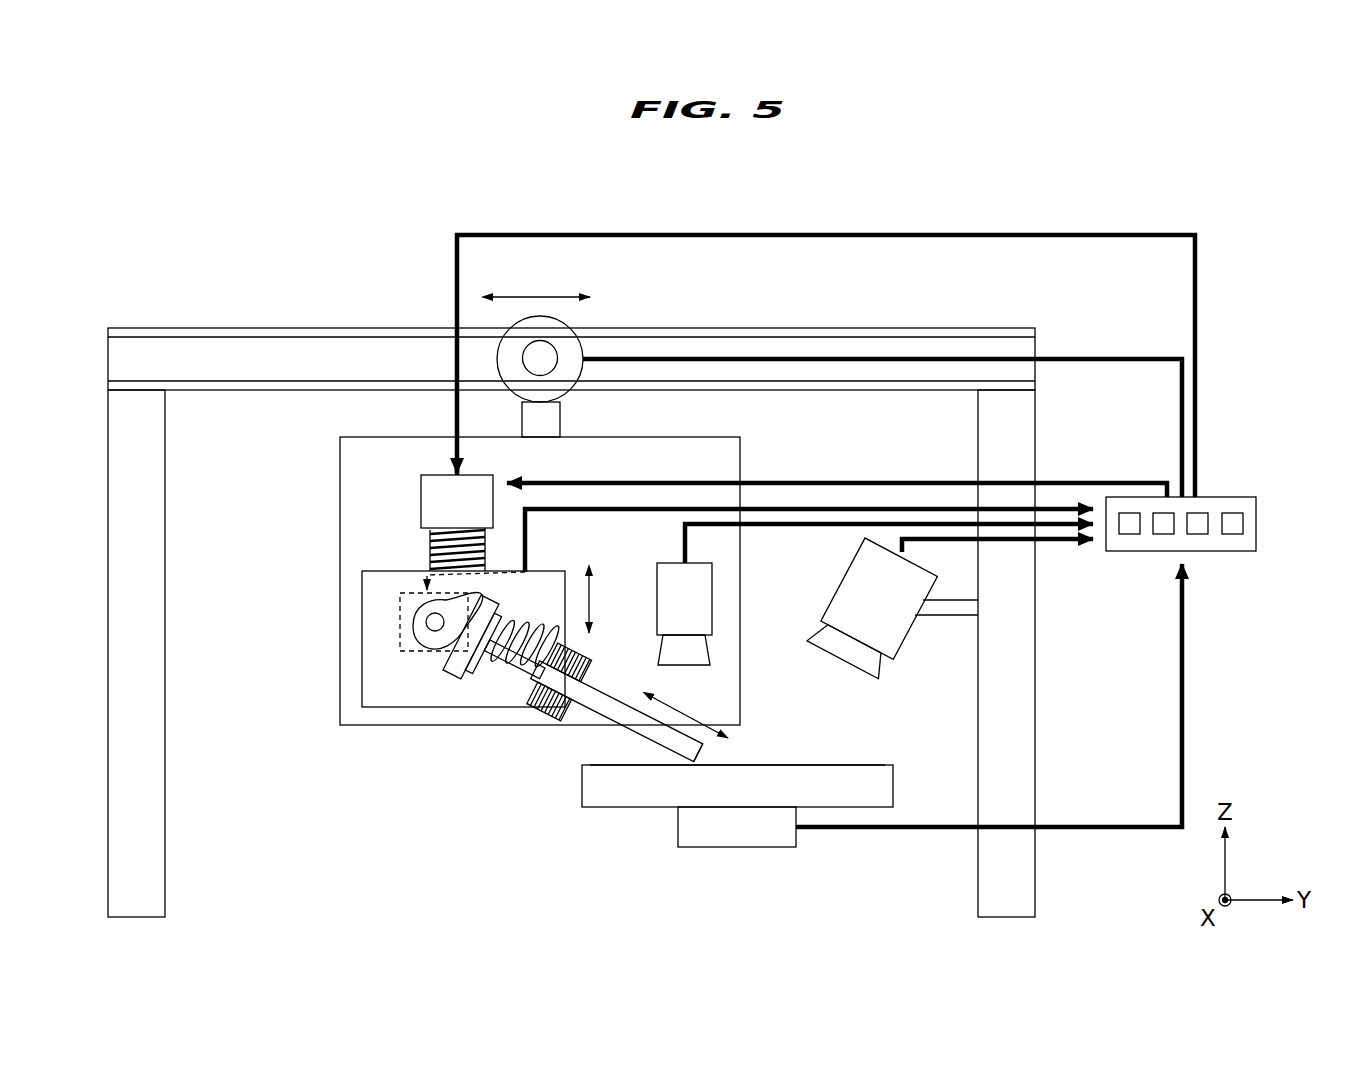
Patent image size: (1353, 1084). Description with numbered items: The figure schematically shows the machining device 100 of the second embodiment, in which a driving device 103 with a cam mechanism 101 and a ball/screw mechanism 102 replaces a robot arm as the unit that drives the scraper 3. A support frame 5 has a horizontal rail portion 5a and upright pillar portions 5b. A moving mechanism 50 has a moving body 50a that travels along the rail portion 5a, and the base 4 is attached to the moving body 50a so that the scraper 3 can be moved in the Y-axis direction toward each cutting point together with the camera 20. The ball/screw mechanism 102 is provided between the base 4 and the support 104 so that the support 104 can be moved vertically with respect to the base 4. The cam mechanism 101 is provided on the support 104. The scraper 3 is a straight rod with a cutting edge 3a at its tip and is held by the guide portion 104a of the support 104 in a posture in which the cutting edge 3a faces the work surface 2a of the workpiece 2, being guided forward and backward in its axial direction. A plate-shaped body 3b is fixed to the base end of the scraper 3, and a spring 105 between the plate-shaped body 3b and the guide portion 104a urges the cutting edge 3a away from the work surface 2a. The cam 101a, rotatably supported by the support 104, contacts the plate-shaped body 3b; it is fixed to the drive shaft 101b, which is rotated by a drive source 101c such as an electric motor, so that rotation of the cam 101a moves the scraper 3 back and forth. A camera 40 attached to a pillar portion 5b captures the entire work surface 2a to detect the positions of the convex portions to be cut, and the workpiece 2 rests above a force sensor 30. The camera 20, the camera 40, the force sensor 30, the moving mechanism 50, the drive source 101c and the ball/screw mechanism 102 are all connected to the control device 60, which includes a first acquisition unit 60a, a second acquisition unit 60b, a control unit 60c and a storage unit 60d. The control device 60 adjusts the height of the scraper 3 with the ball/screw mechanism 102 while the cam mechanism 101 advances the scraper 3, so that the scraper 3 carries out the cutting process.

The machining device 100 is at (1232, 208).
The support frame 5 is at (573, 583).
The rail portion 5a is at (378, 352).
The pillar portion 5b is at (130, 663).
The moving mechanism 50 is at (566, 367).
The moving body 50a is at (543, 362).
The base 4 is at (338, 650).
The ball/screw mechanism 102 is at (413, 540).
The driving device 103 is at (540, 562).
The support 104 is at (420, 707).
The guide portion 104a is at (553, 718).
The spring 105 is at (500, 690).
The cam mechanism 101 is at (497, 605).
The cam 101a is at (450, 604).
The drive shaft 101b is at (435, 622).
The drive source 101c is at (400, 645).
The scraper 3 is at (629, 753).
The cutting edge 3a is at (695, 765).
The plate-shaped body 3b is at (452, 676).
The camera 20 is at (656, 598).
The camera 40 is at (915, 630).
The workpiece 2 is at (757, 757).
The work surface 2a is at (793, 765).
The force sensor 30 is at (745, 850).
The control device 60 is at (867, 531).
The first acquisition unit 60a is at (1128, 527).
The second acquisition unit 60b is at (1163, 527).
The control unit 60c is at (1196, 527).
The storage unit 60d is at (1230, 527).